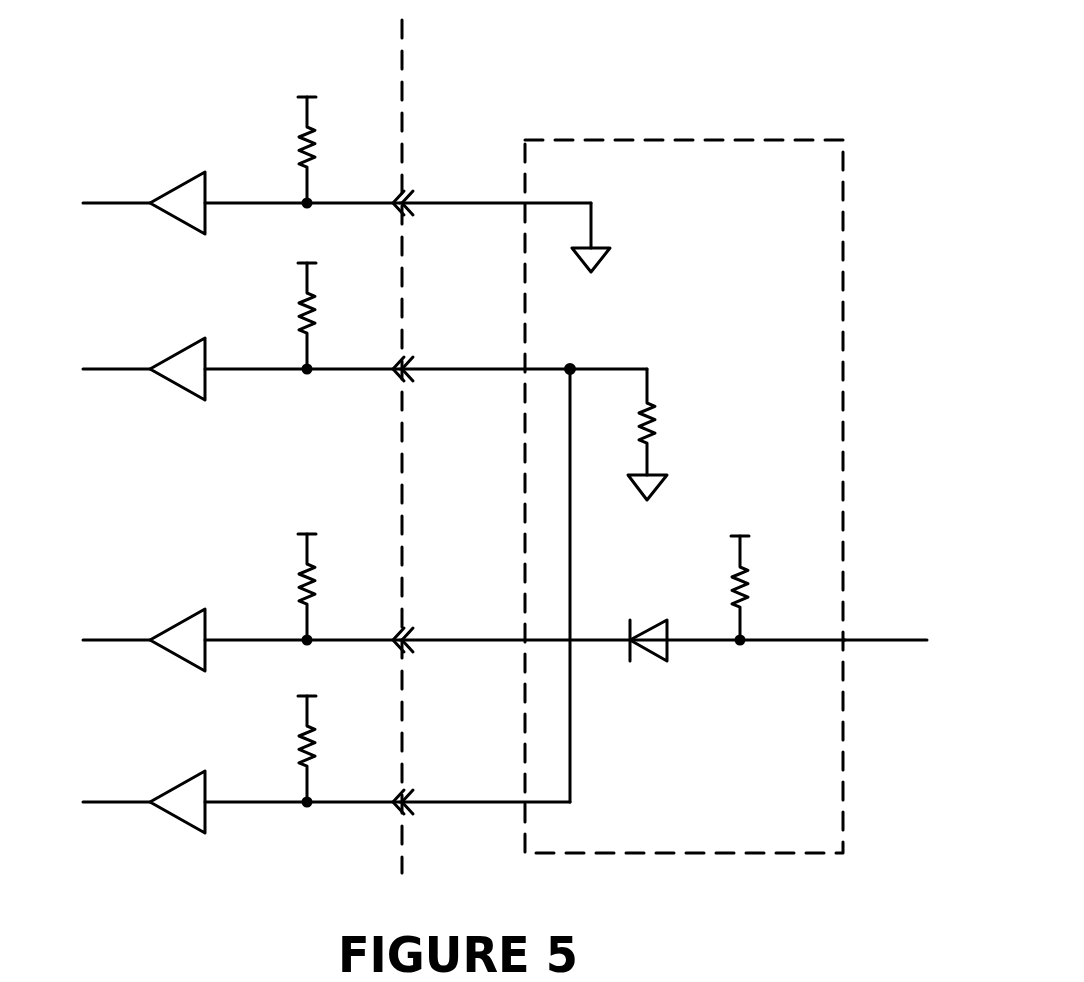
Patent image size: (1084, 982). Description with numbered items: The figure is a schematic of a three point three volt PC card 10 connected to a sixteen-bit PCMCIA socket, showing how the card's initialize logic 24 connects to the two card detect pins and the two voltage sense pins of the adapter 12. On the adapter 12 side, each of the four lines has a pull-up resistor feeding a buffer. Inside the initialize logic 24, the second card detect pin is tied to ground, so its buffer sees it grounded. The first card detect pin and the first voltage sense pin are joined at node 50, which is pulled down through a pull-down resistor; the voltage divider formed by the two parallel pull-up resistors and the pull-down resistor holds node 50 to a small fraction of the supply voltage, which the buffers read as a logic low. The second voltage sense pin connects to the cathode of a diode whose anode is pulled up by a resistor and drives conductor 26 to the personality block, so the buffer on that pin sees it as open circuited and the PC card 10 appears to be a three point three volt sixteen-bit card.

The PC card 10 is at (574, 58).
The PCMCIA adapter 12 is at (342, 58).
The initialize logic 24 is at (768, 140).
The conductor 26 is at (878, 640).
The node 50 is at (572, 367).